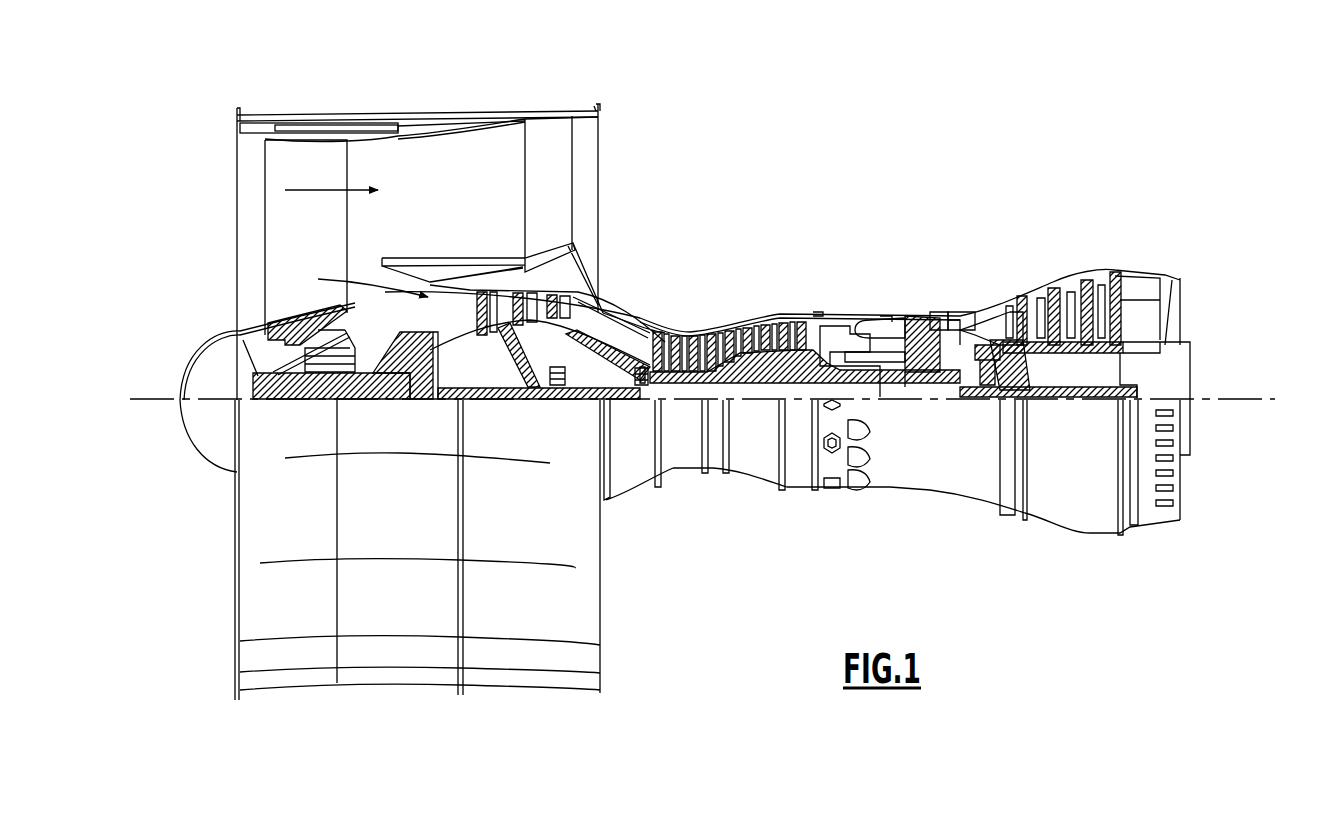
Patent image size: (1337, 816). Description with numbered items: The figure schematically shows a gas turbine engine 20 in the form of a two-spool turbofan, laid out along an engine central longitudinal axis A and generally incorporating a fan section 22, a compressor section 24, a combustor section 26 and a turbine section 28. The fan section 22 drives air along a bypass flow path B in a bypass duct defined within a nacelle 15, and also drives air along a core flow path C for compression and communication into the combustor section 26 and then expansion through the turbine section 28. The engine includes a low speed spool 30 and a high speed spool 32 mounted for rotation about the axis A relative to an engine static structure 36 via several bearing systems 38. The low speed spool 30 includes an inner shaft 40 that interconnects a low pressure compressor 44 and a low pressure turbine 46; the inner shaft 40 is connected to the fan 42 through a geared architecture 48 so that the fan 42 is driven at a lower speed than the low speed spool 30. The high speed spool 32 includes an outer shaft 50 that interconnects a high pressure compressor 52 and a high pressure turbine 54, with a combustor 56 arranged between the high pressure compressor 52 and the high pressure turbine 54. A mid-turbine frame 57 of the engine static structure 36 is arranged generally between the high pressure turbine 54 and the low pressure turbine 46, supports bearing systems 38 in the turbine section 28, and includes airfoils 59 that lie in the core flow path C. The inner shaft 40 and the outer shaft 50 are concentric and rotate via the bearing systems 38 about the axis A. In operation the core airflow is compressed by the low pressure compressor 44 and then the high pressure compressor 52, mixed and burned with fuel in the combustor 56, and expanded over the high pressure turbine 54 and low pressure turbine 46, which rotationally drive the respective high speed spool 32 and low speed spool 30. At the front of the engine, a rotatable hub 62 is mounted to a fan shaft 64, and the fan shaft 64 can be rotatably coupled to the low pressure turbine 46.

The gas turbine engine 20 is at (877, 167).
The fan section 22 is at (348, 107).
The nacelle 15 is at (418, 122).
The fan 42 is at (323, 244).
The rotatable hub 62 is at (275, 320).
The fan shaft 64 is at (250, 330).
The low pressure compressor 44 is at (510, 312).
The compressor section 24 is at (650, 303).
The high pressure compressor 52 is at (730, 373).
The high speed spool 32 is at (797, 358).
The combustor section 26 is at (872, 300).
The combustor 56 is at (880, 343).
The high pressure turbine 54 is at (937, 317).
The mid-turbine frame 57 is at (982, 307).
The airfoils 59 is at (1012, 365).
The turbine section 28 is at (1020, 262).
The low pressure turbine 46 is at (1063, 286).
The geared architecture 48 is at (422, 400).
The bearing systems 38 is at (556, 400).
The inner shaft 40 is at (622, 402).
The low speed spool 30 is at (757, 403).
The engine static structure 36 is at (798, 490).
The outer shaft 50 is at (882, 400).
The engine central longitudinal axis A is at (1260, 399).
The bypass flow path B is at (318, 190).
The core flow path C is at (364, 280).